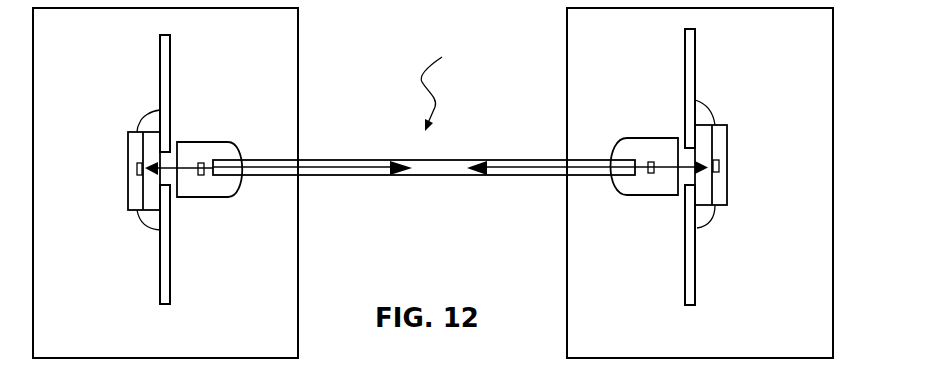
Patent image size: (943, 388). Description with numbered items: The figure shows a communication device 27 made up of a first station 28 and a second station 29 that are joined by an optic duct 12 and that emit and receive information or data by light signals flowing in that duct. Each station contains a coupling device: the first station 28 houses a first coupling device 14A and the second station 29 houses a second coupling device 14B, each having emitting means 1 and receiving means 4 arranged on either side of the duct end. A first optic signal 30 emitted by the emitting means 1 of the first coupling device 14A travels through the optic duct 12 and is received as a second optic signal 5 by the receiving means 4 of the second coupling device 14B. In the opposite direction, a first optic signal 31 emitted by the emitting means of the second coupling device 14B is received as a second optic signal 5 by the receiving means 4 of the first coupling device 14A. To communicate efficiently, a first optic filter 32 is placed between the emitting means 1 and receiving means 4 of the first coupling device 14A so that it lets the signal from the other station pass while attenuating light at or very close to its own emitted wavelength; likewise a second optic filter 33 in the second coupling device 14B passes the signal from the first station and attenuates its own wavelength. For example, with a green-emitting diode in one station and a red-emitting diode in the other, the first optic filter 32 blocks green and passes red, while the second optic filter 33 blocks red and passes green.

The emitting means 1 is at (240, 197).
The receiving means 4 is at (140, 165).
The second optic signal 5 is at (183, 167).
The optic duct 12 is at (435, 176).
The first coupling device 14A is at (188, 224).
The second coupling device 14B is at (668, 212).
The communication device 27 is at (441, 84).
The first station 28 is at (298, 118).
The second station 29 is at (570, 103).
The first optic signal 30 is at (357, 161).
The first optic signal 31 is at (530, 167).
The first optic filter 32 is at (150, 193).
The second optic filter 33 is at (705, 140).